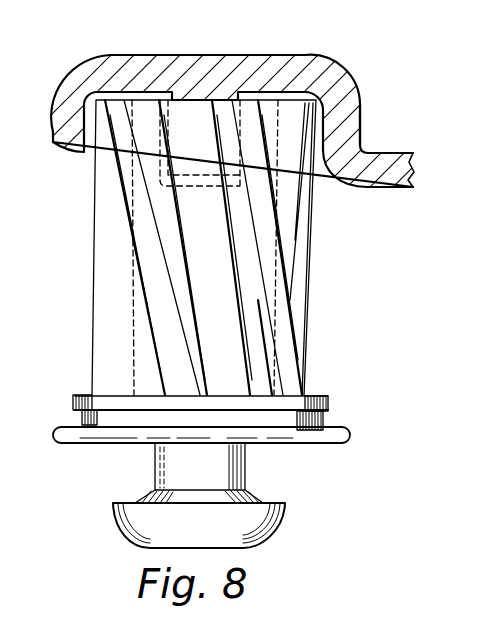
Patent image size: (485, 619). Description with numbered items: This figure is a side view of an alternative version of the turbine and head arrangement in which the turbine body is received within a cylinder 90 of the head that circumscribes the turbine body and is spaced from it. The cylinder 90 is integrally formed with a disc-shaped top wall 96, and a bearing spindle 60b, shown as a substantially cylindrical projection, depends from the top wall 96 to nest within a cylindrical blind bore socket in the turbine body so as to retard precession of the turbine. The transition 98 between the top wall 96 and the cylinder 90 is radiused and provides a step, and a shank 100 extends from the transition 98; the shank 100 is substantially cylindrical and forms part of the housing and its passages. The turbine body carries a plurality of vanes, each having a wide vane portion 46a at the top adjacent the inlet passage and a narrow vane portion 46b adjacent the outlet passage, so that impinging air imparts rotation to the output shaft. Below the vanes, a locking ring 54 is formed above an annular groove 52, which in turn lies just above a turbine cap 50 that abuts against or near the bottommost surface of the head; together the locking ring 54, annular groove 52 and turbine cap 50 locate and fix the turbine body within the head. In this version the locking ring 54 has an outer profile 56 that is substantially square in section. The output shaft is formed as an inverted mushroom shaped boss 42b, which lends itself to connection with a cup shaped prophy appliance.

The mushroom shaped boss 42b is at (133, 530).
The wide vane portion 46a is at (297, 200).
The narrow vane portion 46b is at (293, 362).
The turbine cap 50 is at (120, 440).
The annular groove 52 is at (327, 422).
The locking ring 54 is at (122, 405).
The outer profile 56 is at (75, 403).
The bearing spindle 60b is at (197, 123).
The cylinder 90 is at (72, 98).
The disc-shaped top wall 96 is at (277, 70).
The transition 98 is at (362, 120).
The shank 100 is at (390, 188).